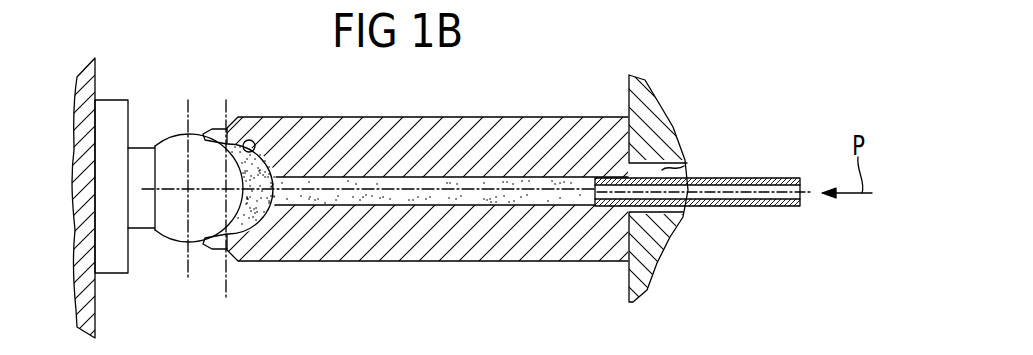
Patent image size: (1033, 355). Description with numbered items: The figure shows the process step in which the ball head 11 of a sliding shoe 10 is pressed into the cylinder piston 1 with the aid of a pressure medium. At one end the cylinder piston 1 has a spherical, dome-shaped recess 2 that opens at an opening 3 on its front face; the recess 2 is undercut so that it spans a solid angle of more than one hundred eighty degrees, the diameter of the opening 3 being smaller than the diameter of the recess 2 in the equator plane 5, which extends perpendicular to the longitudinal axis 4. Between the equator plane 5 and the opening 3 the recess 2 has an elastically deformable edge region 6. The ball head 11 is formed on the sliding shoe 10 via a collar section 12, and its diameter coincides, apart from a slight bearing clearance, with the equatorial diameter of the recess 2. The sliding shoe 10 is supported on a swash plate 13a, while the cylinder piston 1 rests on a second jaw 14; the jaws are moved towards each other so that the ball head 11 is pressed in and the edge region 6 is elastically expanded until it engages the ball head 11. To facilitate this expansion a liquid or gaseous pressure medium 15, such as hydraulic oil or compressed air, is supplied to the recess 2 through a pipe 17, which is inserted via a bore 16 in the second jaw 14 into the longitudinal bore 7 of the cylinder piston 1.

The cylinder piston 1 is at (538, 128).
The dome-shaped recess 2 is at (253, 142).
The opening 3 is at (203, 243).
The longitudinal axis 4 is at (503, 190).
The equator plane 5 is at (226, 296).
The edge region 6 is at (213, 130).
The longitudinal bore 7 is at (392, 195).
The sliding shoe 10 is at (113, 108).
The ball head 11 is at (170, 153).
The collar section 12 is at (143, 223).
The swash plate 13a is at (93, 312).
The second jaw 14 is at (628, 283).
The pressure medium 15 is at (255, 215).
The bore 16 is at (684, 166).
The pipe 17 is at (772, 178).